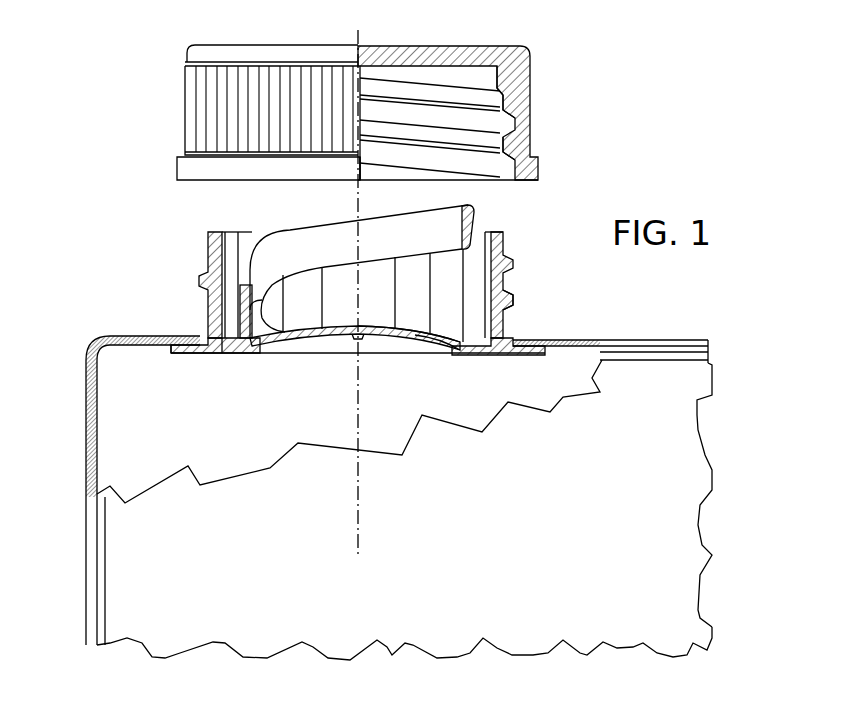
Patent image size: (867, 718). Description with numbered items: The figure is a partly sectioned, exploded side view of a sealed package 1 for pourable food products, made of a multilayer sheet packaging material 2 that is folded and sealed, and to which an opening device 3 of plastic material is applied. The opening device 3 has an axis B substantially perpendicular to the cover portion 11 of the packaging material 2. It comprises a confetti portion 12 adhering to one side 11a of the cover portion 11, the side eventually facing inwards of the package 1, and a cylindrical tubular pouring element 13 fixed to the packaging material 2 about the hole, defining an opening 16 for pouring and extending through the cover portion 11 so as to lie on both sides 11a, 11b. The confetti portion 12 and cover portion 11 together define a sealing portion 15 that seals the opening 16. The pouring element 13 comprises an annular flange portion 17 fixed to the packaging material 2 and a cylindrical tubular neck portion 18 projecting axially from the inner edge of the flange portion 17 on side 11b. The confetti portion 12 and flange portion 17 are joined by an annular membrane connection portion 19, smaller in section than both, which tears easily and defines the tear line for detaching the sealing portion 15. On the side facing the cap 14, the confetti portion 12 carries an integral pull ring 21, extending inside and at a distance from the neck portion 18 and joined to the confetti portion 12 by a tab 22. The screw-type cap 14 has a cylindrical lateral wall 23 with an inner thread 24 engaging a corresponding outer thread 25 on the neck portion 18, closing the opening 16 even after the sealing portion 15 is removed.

The sealed package 1 is at (712, 325).
The multilayer sheet packaging material 2 is at (124, 330).
The opening device 3 is at (537, 275).
The cover portion 11 is at (335, 330).
The side of cover portion 11a is at (433, 347).
The side of cover portion 11b is at (393, 335).
The confetti portion 12 is at (388, 356).
The cylindrical tubular pouring element 13 is at (511, 233).
The cap 14 is at (550, 72).
The sealing portion 15 is at (322, 355).
The opening 16 is at (236, 258).
The annular flange portion 17 is at (182, 355).
The cylindrical tubular neck portion 18 is at (218, 312).
The annular membrane connection portion 19 is at (222, 355).
The pull ring 21 is at (418, 228).
The tab 22 is at (258, 314).
The cylindrical lateral wall 23 is at (518, 95).
The inner thread 24 is at (503, 100).
The outer thread 25 is at (514, 298).
The axis B is at (362, 42).